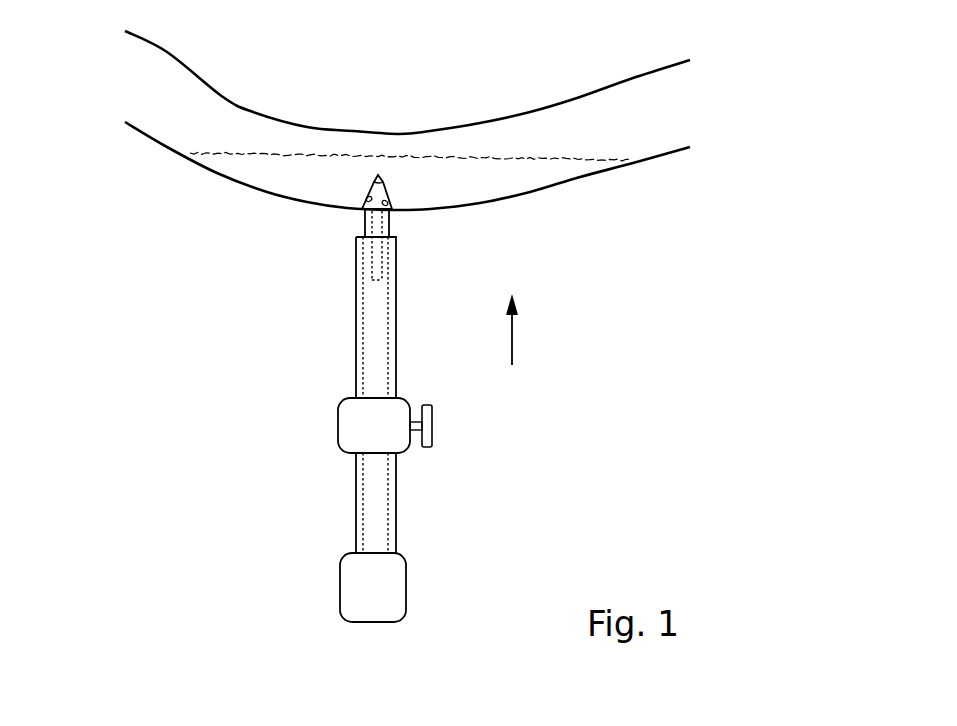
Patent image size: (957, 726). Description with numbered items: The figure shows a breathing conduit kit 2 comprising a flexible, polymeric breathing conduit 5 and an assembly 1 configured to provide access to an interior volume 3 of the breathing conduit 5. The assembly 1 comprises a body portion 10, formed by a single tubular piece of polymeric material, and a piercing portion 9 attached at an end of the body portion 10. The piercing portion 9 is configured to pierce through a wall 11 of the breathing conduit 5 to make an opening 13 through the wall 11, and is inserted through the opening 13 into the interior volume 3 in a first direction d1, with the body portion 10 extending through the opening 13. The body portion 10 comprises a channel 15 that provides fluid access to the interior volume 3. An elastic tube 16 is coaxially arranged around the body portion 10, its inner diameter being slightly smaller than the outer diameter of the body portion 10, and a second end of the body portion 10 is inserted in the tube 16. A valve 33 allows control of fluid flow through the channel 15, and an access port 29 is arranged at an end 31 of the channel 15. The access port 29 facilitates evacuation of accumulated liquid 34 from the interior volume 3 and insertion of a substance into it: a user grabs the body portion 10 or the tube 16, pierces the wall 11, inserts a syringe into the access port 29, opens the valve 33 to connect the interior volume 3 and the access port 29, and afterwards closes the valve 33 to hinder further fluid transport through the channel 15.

The assembly 1 is at (268, 298).
The breathing conduit kit 2 is at (475, 57).
The interior volume 3 is at (190, 113).
The breathing conduit 5 is at (167, 52).
The piercing portion 9 is at (378, 173).
The body portion 10 is at (364, 228).
The wall 11 is at (418, 212).
The opening 13 is at (362, 210).
The channel 15 is at (382, 220).
The tube 16 is at (357, 346).
The access port 29 is at (373, 587).
The end 31 is at (372, 550).
The valve 33 is at (385, 425).
The accumulated liquid 34 is at (300, 172).
The first direction d1 is at (512, 340).